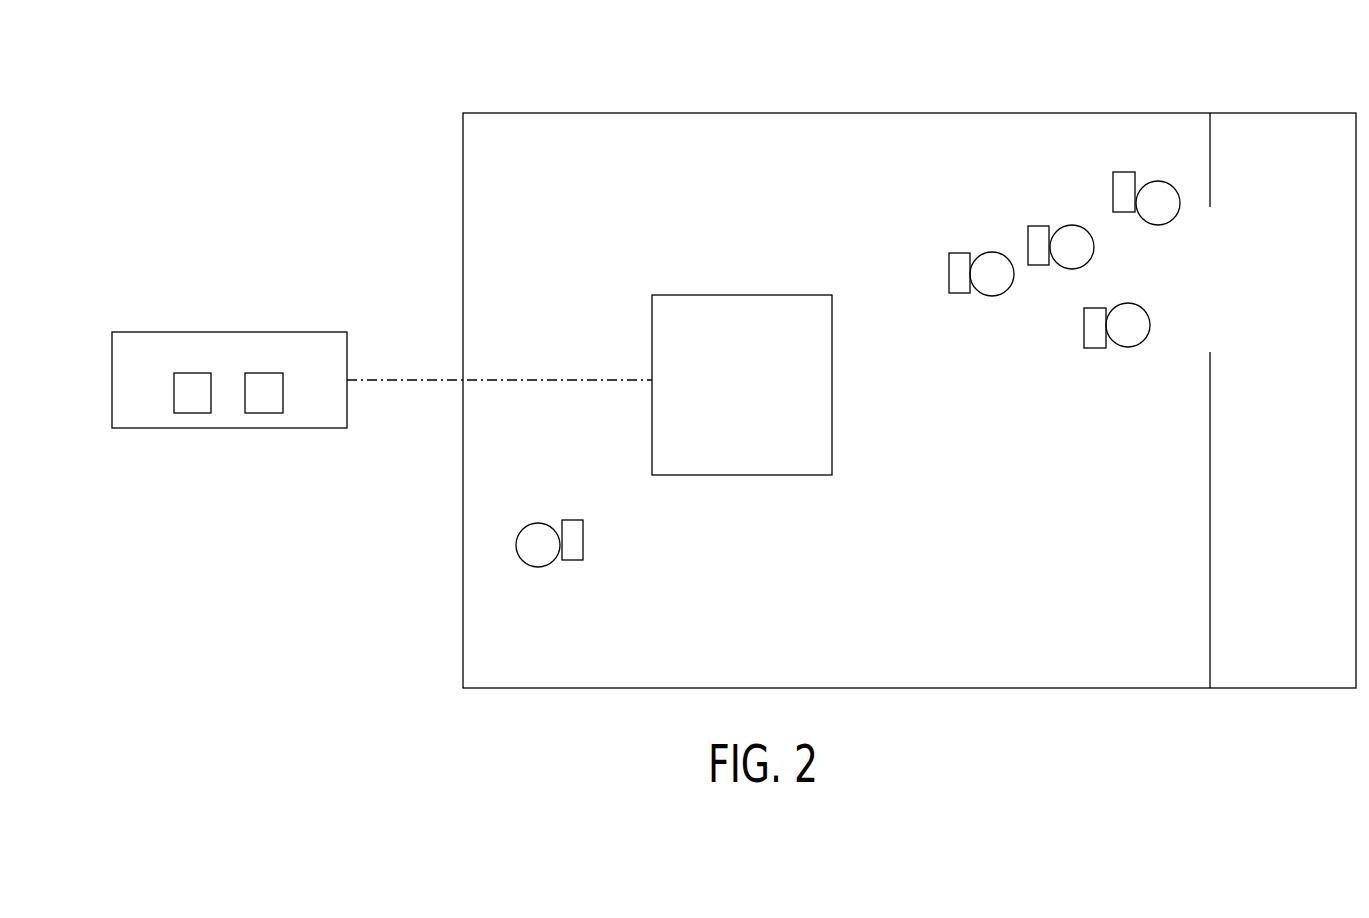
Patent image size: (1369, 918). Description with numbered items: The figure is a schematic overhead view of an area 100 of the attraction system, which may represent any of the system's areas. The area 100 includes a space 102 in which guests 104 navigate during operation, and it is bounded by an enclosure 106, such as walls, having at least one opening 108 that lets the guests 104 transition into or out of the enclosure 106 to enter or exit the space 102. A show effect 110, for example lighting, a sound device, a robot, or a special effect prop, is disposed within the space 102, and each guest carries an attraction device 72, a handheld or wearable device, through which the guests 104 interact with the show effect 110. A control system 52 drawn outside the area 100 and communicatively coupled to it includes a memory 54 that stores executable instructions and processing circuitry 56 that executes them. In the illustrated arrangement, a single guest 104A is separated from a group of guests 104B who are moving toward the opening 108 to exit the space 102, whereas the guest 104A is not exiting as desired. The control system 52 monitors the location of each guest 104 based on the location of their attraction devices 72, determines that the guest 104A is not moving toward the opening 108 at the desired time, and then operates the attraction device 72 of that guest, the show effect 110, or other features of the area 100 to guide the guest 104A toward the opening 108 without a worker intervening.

The area 100 is at (1078, 58).
The space 102 is at (612, 194).
The guests 104 is at (848, 362).
The guest 104A is at (540, 523).
The group of guests 104B is at (1021, 252).
The enclosure 106 is at (687, 113).
The opening 108 is at (1237, 307).
The show effect 110 is at (742, 295).
The attraction device 72 is at (848, 362).
The control system 52 is at (242, 332).
The memory 54 is at (174, 390).
The processing circuitry 56 is at (283, 390).